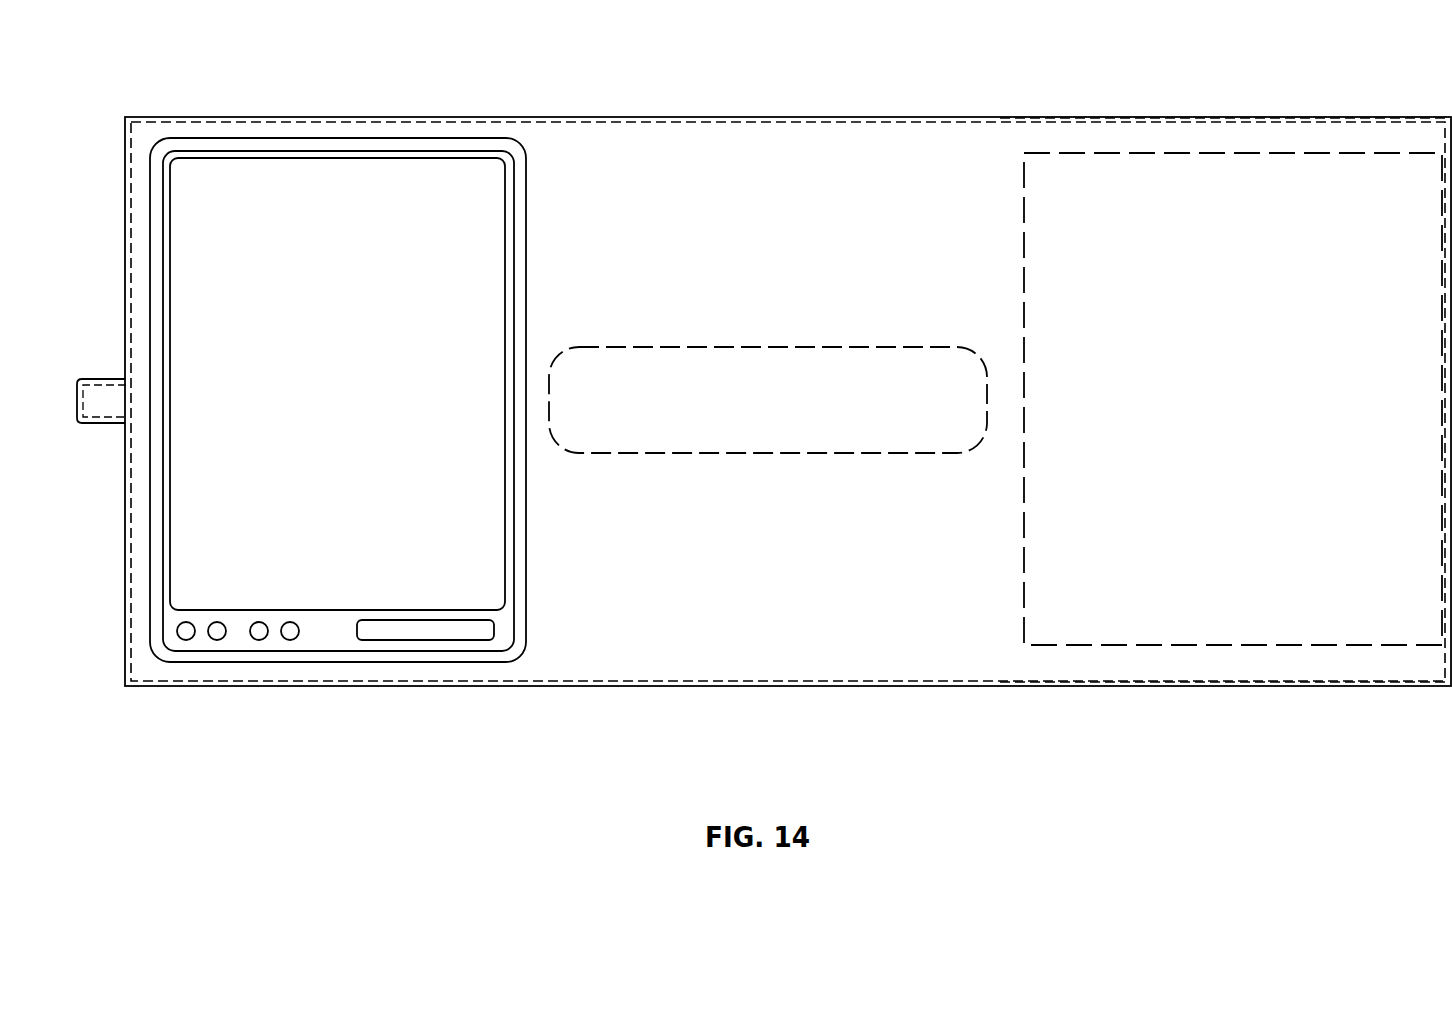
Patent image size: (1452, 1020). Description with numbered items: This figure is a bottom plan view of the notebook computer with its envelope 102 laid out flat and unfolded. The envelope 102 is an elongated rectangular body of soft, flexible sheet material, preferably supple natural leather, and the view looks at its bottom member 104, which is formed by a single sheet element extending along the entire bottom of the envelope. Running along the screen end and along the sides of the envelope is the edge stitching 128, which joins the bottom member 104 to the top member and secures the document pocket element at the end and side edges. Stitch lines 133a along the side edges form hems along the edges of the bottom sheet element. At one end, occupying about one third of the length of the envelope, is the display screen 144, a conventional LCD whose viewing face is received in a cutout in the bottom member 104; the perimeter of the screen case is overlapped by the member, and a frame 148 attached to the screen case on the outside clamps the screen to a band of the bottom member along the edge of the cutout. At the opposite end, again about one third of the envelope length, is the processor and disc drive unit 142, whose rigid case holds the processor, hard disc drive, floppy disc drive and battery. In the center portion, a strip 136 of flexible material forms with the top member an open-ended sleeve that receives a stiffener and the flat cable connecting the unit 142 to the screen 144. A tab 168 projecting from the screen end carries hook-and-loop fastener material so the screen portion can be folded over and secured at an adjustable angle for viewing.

The envelope 102 is at (600, 690).
The bottom member 104 is at (717, 582).
The edge stitching 128 is at (810, 118).
The stitch lines 133a is at (1358, 118).
The strip 136 is at (878, 453).
The processor and disc drive unit 142 is at (1241, 656).
The display screen 144 is at (323, 656).
The frame 148 is at (527, 233).
The tab 168 is at (100, 380).